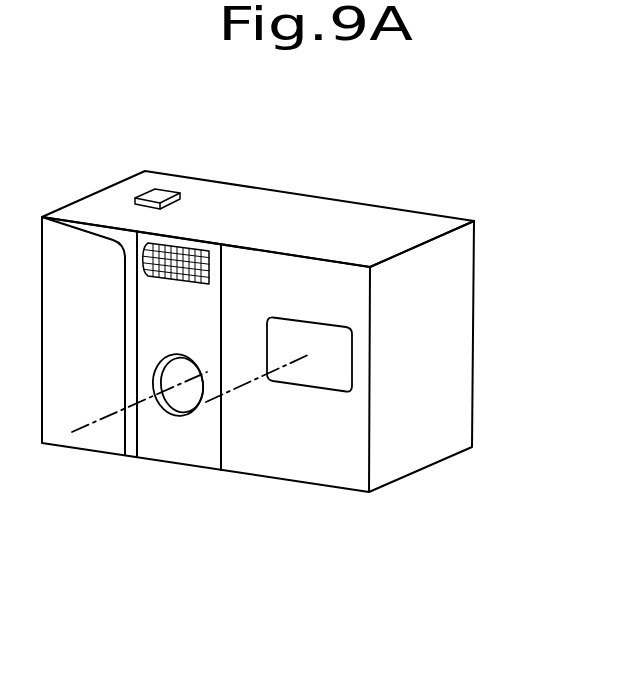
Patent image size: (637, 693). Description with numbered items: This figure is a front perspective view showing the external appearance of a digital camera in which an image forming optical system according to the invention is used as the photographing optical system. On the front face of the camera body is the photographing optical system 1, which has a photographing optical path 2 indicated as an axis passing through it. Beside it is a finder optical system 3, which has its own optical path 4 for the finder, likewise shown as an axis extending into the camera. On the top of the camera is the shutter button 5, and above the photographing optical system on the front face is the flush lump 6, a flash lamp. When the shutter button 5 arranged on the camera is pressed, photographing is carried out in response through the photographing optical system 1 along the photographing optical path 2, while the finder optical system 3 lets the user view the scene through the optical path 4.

The photographing optical system 1 is at (187, 397).
The photographing optical path 2 is at (116, 412).
The finder optical system 3 is at (332, 362).
The optical path for finder 4 is at (247, 382).
The shutter button 5 is at (163, 195).
The flush lump 6 is at (171, 247).